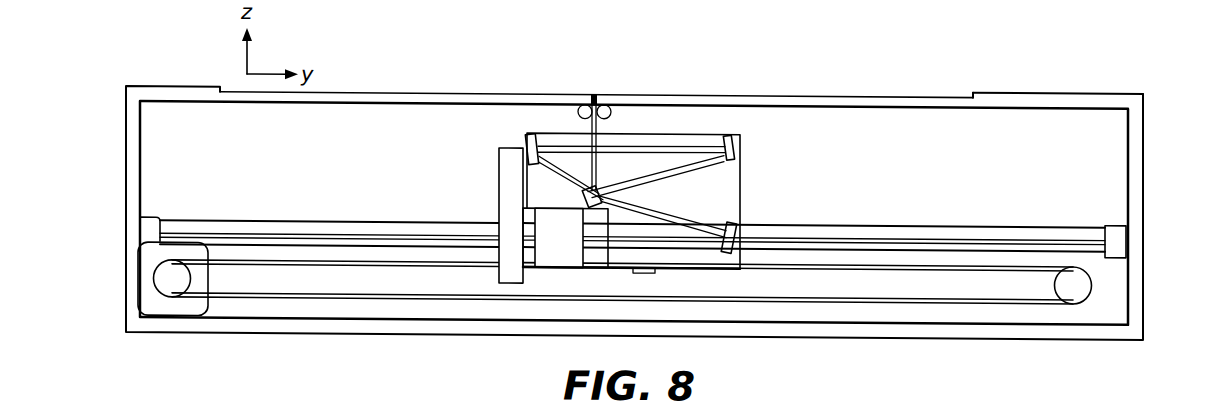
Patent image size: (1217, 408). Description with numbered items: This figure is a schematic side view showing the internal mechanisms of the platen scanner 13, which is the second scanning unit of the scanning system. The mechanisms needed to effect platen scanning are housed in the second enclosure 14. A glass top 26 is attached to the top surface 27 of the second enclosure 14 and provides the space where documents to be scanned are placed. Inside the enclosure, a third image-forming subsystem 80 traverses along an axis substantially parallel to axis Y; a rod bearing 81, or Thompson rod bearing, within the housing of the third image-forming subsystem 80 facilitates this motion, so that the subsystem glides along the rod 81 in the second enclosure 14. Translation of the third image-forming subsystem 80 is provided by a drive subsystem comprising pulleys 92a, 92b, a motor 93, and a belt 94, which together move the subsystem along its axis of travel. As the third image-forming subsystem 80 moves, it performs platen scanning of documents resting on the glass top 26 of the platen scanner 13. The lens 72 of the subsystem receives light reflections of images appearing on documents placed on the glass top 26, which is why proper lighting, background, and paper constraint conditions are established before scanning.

The platen scanner 13 is at (90, 102).
The second enclosure 14 is at (1150, 290).
The glass top 26 is at (883, 90).
The top surface 27 is at (1021, 85).
The lens 72 is at (545, 266).
The third image-forming subsystem 80 is at (672, 120).
The rod bearing 81 is at (238, 219).
The pulley 92a is at (158, 300).
The pulley 92b is at (1088, 291).
The motor 93 is at (193, 306).
The belt 94 is at (332, 299).